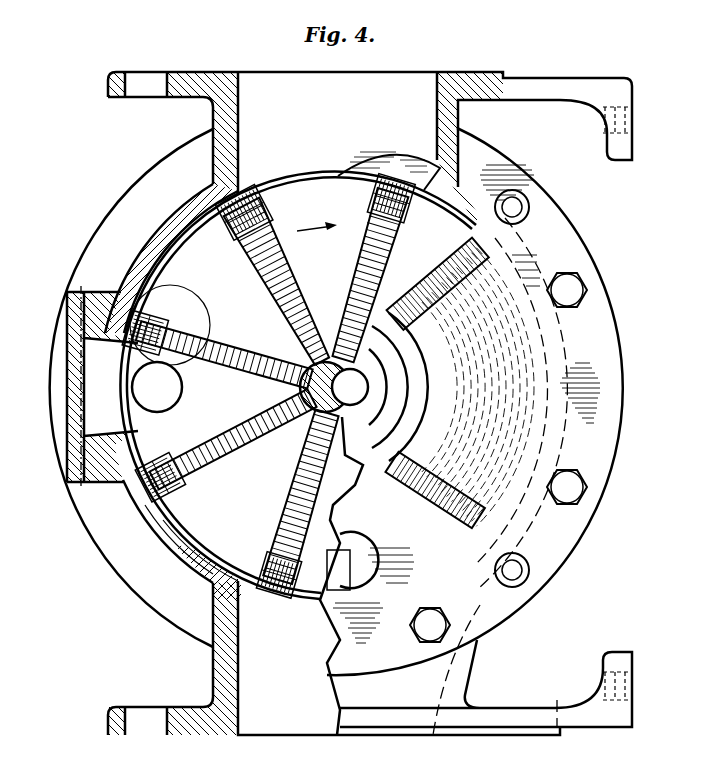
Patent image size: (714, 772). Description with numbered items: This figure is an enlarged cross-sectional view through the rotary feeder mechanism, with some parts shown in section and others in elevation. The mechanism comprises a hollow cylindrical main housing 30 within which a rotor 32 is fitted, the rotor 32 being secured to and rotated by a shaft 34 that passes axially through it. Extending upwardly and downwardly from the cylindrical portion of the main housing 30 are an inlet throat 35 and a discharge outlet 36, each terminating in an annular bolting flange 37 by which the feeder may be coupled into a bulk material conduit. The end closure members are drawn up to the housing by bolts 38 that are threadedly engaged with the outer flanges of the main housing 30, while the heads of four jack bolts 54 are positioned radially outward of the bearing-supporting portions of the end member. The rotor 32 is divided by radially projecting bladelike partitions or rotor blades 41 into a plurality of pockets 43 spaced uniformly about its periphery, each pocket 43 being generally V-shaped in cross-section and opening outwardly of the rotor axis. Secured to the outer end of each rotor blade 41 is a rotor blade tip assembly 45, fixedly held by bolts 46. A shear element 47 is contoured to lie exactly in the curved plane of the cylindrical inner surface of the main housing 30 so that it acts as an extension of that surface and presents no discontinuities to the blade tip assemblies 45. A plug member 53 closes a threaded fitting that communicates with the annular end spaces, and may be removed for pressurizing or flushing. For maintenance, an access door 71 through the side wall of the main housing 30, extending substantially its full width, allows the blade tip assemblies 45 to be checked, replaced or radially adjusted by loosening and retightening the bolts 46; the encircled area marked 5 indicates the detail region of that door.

The main housing 30 is at (173, 231).
The rotor 32 is at (328, 347).
The shaft 34 is at (302, 360).
The inlet throat 35 is at (267, 97).
The discharge outlet 36 is at (287, 722).
The annular bolting flange 37 is at (188, 82).
The bolts 38 is at (578, 288).
The rotor blade 41 is at (307, 480).
The pocket 43 is at (305, 197).
The rotor blade tip assembly 45 is at (262, 215).
The bolts 46 is at (148, 462).
The shear element 47 is at (396, 160).
The plug member 53 is at (341, 562).
The jack bolts 54 is at (527, 213).
The access door 71 is at (70, 363).
The section indicator for FIG. 5 is at (165, 370).